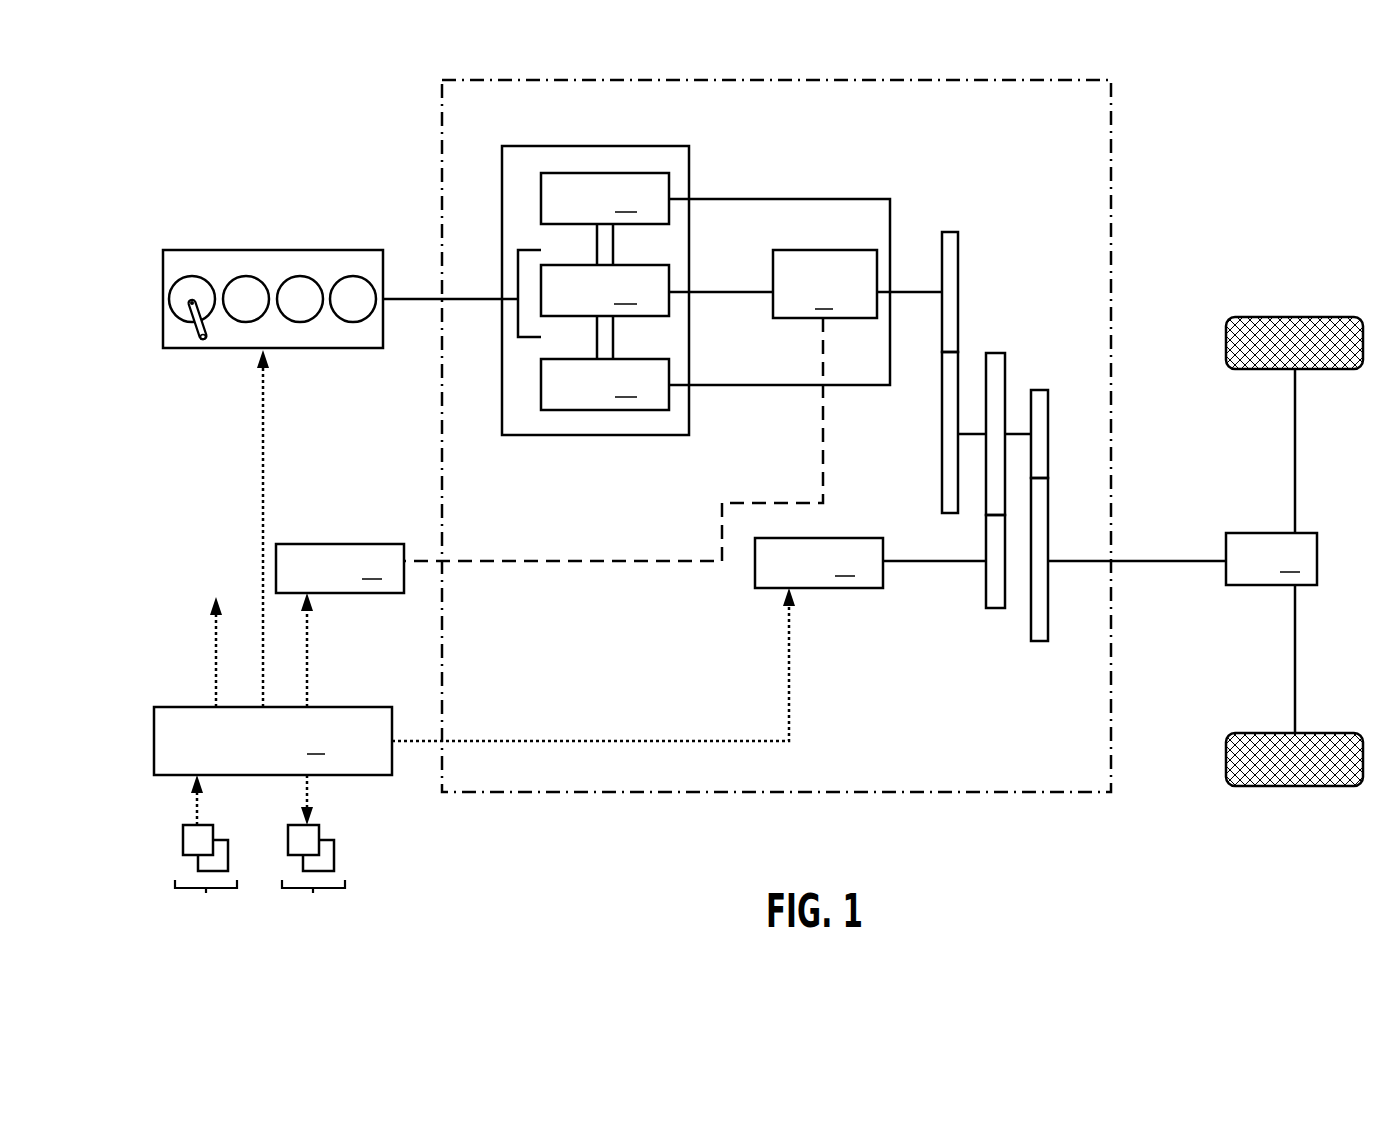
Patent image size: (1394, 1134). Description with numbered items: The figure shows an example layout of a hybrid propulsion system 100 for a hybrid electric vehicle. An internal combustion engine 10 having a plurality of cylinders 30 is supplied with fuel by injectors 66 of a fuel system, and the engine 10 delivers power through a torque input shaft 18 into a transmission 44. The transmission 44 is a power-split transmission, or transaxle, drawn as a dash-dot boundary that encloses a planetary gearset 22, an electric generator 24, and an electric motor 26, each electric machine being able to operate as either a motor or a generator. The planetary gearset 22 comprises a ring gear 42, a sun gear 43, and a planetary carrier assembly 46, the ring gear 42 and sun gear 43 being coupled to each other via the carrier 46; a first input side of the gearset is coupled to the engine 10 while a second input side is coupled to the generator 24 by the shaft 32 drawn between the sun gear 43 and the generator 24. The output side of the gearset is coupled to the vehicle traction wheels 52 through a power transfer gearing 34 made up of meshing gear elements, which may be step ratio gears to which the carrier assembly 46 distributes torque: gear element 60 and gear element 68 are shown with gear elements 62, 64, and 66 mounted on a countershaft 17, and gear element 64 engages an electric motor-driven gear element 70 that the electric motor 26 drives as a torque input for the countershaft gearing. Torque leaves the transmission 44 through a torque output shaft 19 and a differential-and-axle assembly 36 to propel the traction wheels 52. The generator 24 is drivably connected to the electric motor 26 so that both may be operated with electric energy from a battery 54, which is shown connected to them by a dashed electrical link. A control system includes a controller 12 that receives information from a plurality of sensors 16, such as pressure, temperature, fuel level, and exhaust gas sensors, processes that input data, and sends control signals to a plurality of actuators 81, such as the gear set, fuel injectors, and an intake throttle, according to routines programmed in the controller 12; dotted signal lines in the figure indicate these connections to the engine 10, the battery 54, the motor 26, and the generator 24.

The hybrid propulsion system 100 is at (1318, 168).
The internal combustion engine 10 is at (192, 250).
The cylinders 30 is at (184, 280).
The injectors 66 is at (192, 334).
The torque input shaft 18 is at (392, 299).
The planetary gearset 22 is at (546, 146).
The ring gear 42 is at (605, 291).
The sun gear 43 is at (605, 290).
The planetary carrier assembly 46 is at (607, 257).
The generator shaft 32 is at (705, 292).
The electric generator 24 is at (857, 284).
The power transfer gearing 34 is at (1031, 224).
The meshing gear element 60 is at (950, 232).
The gear element 62 is at (941, 447).
The gear element 64 is at (994, 353).
The electric motor-driven gear element 70 is at (995, 608).
The meshing gear element 68 is at (1040, 641).
The countershaft 17 is at (968, 434).
The electric motor 26 is at (870, 563).
The torque output shaft 19 is at (1140, 561).
The differential-and-axle assembly 36 is at (1271, 559).
The vehicle traction wheels 52 is at (1280, 317).
The battery 54 is at (340, 568).
The controller 12 is at (474, 562).
The sensors 16 is at (201, 854).
The actuators 81 is at (309, 854).
The transmission 44 is at (1112, 130).